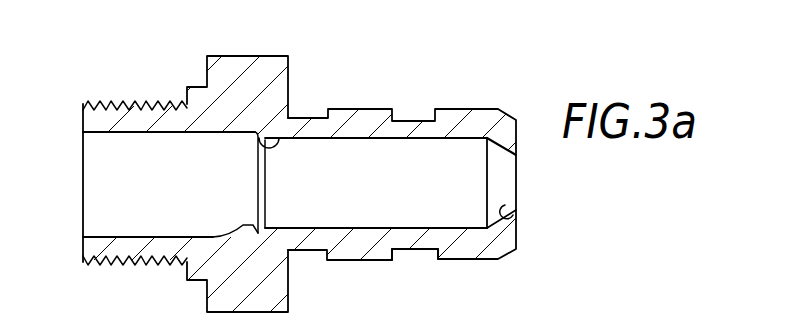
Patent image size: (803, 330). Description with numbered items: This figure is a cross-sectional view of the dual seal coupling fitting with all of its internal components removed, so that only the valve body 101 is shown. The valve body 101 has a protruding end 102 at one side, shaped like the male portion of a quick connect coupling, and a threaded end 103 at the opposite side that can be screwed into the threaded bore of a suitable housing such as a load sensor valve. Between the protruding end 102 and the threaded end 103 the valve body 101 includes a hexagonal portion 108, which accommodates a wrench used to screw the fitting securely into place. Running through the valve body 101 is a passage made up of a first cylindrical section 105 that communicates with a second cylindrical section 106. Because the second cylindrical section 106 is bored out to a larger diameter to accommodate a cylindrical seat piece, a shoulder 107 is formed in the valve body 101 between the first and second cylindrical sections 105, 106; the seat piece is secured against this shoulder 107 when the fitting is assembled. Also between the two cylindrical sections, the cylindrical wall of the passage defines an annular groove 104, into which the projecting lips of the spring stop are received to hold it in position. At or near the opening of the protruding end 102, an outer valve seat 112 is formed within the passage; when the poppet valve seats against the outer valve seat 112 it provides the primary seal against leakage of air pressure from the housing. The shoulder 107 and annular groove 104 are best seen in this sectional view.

The valve body 101 is at (466, 108).
The protruding end 102 is at (402, 251).
The threaded end 103 is at (108, 267).
The annular groove 104 is at (297, 124).
The first cylindrical section 105 is at (362, 217).
The second cylindrical section 106 is at (102, 200).
The shoulder 107 is at (188, 264).
The hexagonal portion 108 is at (231, 55).
The outer valve seat 112 is at (517, 201).